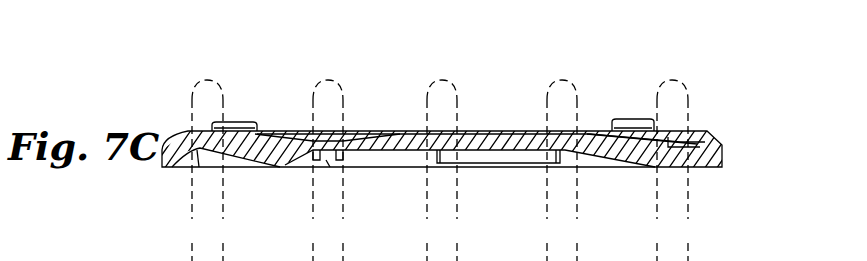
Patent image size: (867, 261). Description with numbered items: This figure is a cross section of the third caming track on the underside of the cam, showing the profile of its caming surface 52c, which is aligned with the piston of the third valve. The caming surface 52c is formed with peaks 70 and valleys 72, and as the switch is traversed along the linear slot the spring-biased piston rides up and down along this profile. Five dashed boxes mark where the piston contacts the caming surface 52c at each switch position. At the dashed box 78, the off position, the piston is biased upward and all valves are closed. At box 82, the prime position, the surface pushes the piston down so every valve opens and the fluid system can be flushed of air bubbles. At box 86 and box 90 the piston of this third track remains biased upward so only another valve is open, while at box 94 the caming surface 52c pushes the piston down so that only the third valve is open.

The caming surface 52c is at (618, 161).
The peaks 70 is at (330, 165).
The valleys 72 is at (199, 152).
The dashed box 78 is at (204, 78).
The box 82 is at (325, 78).
The box 86 is at (438, 78).
The box 90 is at (558, 78).
The box 94 is at (670, 78).